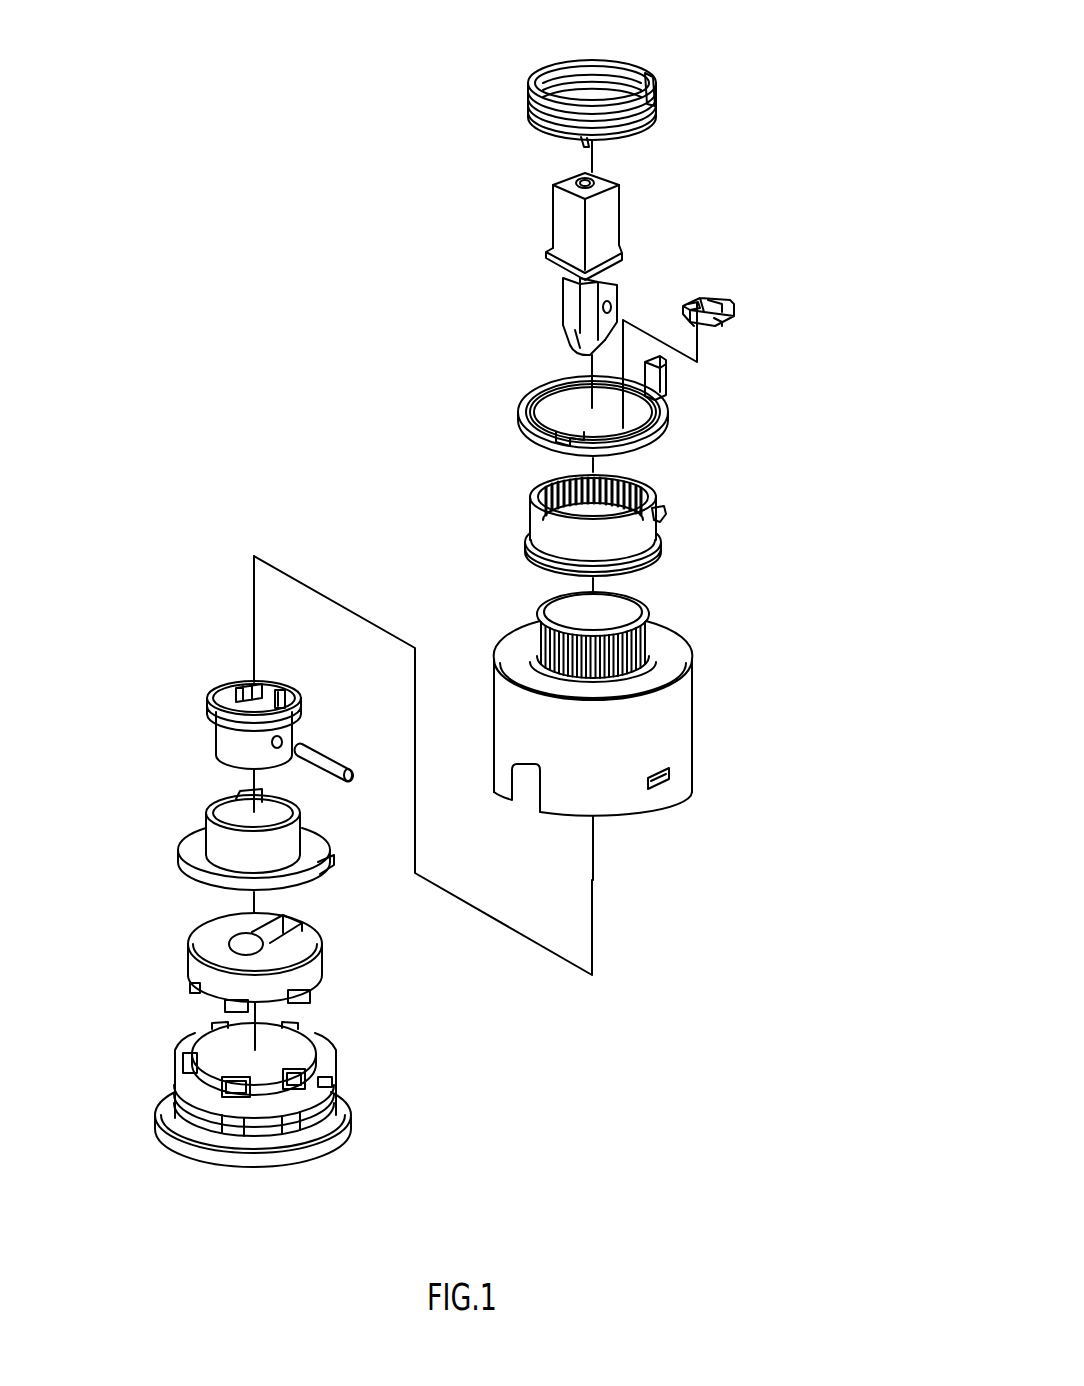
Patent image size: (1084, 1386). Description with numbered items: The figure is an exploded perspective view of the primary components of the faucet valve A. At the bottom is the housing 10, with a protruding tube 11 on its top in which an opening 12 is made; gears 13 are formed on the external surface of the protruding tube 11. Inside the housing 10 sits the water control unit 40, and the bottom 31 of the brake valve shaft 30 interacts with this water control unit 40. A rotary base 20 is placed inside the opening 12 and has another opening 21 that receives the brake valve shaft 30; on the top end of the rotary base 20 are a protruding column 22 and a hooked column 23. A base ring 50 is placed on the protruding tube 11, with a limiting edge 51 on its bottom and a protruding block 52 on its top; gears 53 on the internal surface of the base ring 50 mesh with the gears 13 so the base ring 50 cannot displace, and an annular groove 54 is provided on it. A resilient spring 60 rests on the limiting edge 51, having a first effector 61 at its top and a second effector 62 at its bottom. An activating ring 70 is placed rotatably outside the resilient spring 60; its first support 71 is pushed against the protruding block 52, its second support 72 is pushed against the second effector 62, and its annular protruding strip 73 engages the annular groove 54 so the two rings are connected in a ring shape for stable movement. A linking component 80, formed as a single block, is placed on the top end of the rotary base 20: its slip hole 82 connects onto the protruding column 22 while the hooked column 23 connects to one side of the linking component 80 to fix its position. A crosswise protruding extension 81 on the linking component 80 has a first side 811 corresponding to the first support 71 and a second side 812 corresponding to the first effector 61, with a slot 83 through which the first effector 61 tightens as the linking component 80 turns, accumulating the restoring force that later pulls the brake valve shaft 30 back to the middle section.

The faucet valve A is at (288, 318).
The housing 10 is at (612, 728).
The protruding tube 11 is at (634, 611).
The opening 12 is at (576, 622).
The gears 13 is at (658, 654).
The rotary base 20 is at (234, 708).
The opening 21 is at (243, 690).
The protruding column 22 is at (289, 695).
The hooked column 23 is at (272, 694).
The brake valve shaft 30 is at (596, 290).
The bottom of the brake valve shaft 31 is at (578, 346).
The water control unit 40 is at (145, 953).
The base ring 50 is at (606, 518).
The limiting edge 51 is at (529, 525).
The protruding block 52 is at (663, 520).
The gears 53 is at (638, 488).
The annular groove 54 is at (522, 556).
The resilient spring 60 is at (607, 88).
The first effector 61 is at (650, 72).
The second effector 62 is at (582, 144).
The activating ring 70 is at (544, 374).
The first support 71 is at (648, 366).
The second support 72 is at (558, 432).
The annular protruding strip 73 is at (561, 388).
The linking component 80 is at (742, 311).
The crosswise protruding extension 81 is at (735, 312).
The first side 811 is at (713, 299).
The second side 812 is at (716, 326).
The slip hole 82 is at (690, 301).
The slot 83 is at (692, 326).